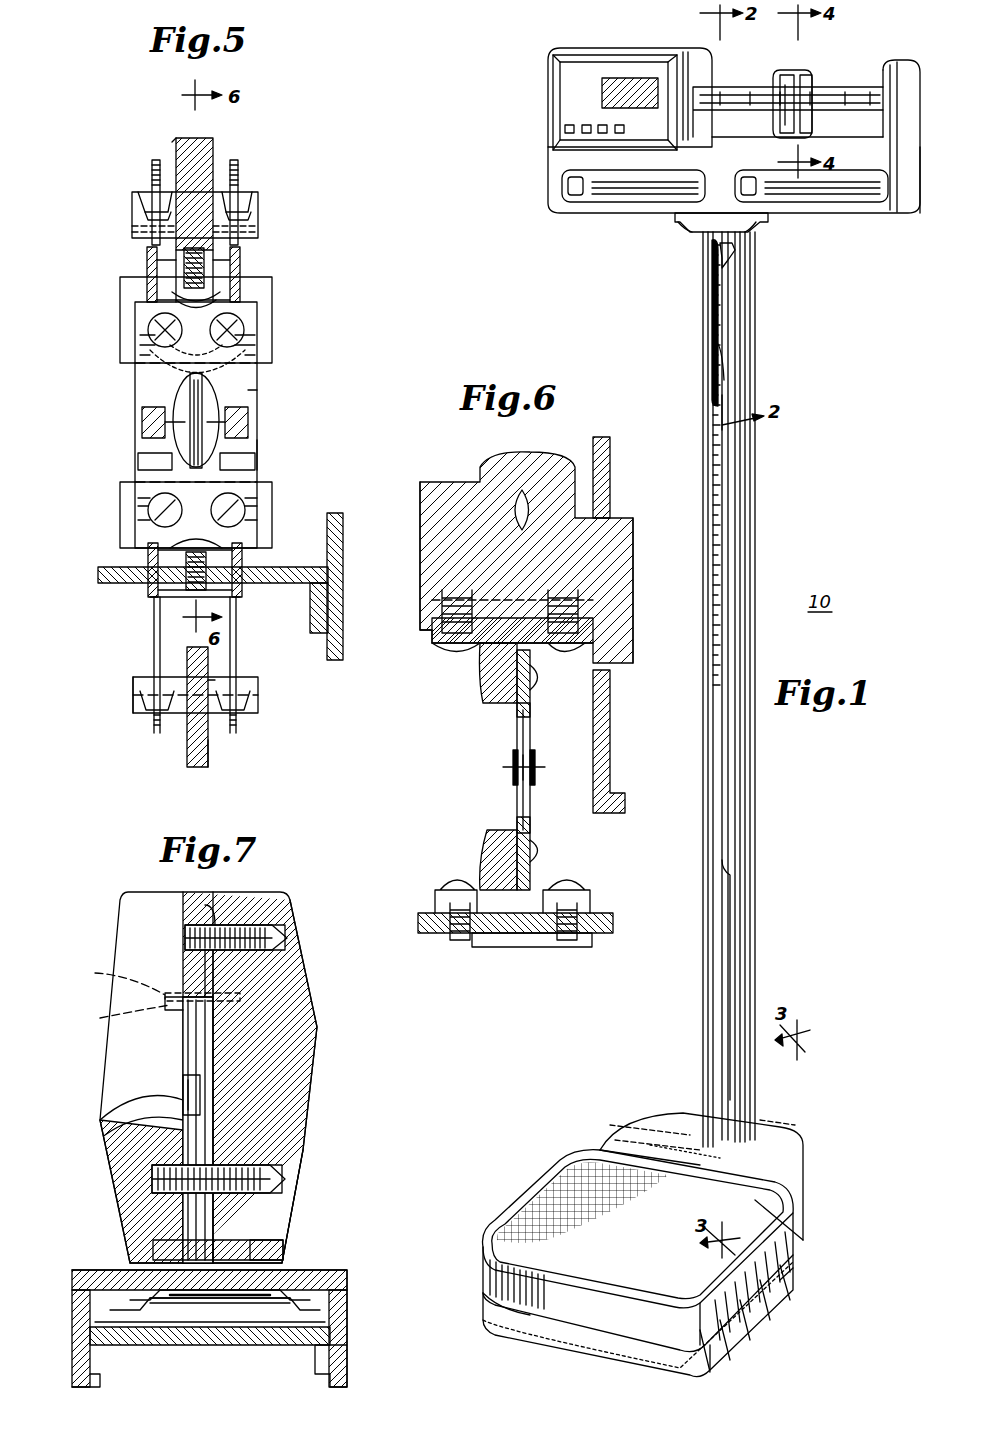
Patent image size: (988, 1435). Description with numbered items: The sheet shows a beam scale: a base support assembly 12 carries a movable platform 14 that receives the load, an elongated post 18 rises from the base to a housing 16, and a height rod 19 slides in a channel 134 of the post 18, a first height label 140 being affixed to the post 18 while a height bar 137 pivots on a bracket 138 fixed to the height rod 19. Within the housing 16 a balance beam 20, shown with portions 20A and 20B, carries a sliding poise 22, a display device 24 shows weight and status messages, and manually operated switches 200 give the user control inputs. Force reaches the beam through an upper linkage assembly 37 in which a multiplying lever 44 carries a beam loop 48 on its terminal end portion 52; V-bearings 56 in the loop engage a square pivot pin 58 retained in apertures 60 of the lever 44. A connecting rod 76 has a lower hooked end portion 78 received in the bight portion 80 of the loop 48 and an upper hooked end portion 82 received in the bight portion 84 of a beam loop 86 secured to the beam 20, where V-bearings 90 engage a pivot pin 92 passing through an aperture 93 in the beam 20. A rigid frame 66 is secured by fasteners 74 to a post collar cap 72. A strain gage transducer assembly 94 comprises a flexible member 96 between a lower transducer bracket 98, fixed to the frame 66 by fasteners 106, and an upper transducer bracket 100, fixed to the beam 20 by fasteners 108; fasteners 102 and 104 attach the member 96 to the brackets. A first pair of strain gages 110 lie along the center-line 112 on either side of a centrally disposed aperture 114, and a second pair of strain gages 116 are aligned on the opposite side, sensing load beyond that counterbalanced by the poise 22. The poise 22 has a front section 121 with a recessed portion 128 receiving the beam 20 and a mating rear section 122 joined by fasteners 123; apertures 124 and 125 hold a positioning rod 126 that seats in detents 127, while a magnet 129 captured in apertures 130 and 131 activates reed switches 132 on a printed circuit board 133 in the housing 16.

In FIG. 1, the base support assembly 12 is at (625, 1120).
In FIG. 1, the movable platform 14 is at (560, 1175).
In FIG. 7, the housing 16 is at (63, 1335).
In FIG. 6, the housing 16 is at (612, 452).
In FIG. 1, the housing 16 is at (598, 216).
In FIG. 1, the elongated post 18 is at (758, 840).
In FIG. 1, the height rod 19 is at (741, 755).
In FIG. 5, the balance beam 20 is at (182, 140).
In FIG. 7, the balance beam 20 is at (174, 1037).
In FIG. 6, the balance beam 20 is at (478, 470).
In FIG. 1, the balance beam 20 is at (720, 80).
In FIG. 5, the beam left portion 20A is at (205, 140).
In FIG. 6, the beam left portion 20A is at (428, 495).
In FIG. 7, the beam right portion 20B is at (220, 1042).
In FIG. 6, the beam right portion 20B is at (635, 530).
In FIG. 1, the beam right portion 20B is at (862, 82).
In FIG. 7, the poise 22 is at (108, 906).
In FIG. 1, the poise 22 is at (775, 82).
In FIG. 1, the display device 24 is at (632, 80).
In FIG. 5, the upper linkage assembly 37 is at (134, 739).
In FIG. 5, the multiplying lever 44 is at (190, 748).
In FIG. 5, the beam loop 48 is at (147, 630).
In FIG. 5, the terminal end portion 52 is at (210, 758).
In FIG. 5, the V-bearing 56 is at (142, 712).
In FIG. 5, the square pivot pin 58 is at (138, 682).
In FIG. 5, the apertures 60 is at (212, 680).
In FIG. 5, the rigid frame 66 is at (305, 585).
In FIG. 7, the rigid frame 66 is at (135, 1345).
In FIG. 6, the rigid frame 66 is at (598, 930).
In FIG. 1, the post collar cap 72 is at (695, 228).
In FIG. 1, the fasteners 74 is at (680, 226).
In FIG. 5, the connecting rod 76 is at (190, 398).
In FIG. 5, the lower hooked end portion 78 is at (258, 538).
In FIG. 5, the bight portion 80 is at (148, 558).
In FIG. 5, the upper hooked end portion 82 is at (194, 385).
In FIG. 5, the bight portion 84 is at (255, 370).
In FIG. 5, the beam loop 86 is at (245, 163).
In FIG. 5, the V-bearings 90 is at (150, 188).
In FIG. 5, the pivot pin 92 is at (258, 205).
In FIG. 5, the aperture 93 is at (170, 140).
In FIG. 5, the strain gage transducer assembly 94 is at (264, 439).
In FIG. 6, the strain gage transducer assembly 94 is at (506, 719).
In FIG. 5, the flexible member 96 is at (250, 390).
In FIG. 6, the flexible member 96 is at (532, 830).
In FIG. 5, the lower transducer bracket 98 is at (130, 500).
In FIG. 6, the lower transducer bracket 98 is at (495, 832).
In FIG. 5, the upper transducer bracket 100 is at (240, 258).
In FIG. 6, the upper transducer bracket 100 is at (488, 700).
In FIG. 5, the fasteners 102 is at (160, 508).
In FIG. 6, the fasteners 102 is at (538, 855).
In FIG. 5, the fasteners 104 is at (158, 330).
In FIG. 6, the fasteners 104 is at (535, 692).
In FIG. 5, the fasteners 106 is at (190, 595).
In FIG. 6, the fasteners 106 is at (458, 888).
In FIG. 5, the fasteners 108 is at (186, 300).
In FIG. 6, the fasteners 108 is at (448, 650).
In FIG. 5, the first pair of strain gages 110 is at (148, 425).
In FIG. 6, the first pair of strain gages 110 is at (535, 770).
In FIG. 5, the center-line 112 is at (140, 447).
In FIG. 6, the center-line 112 is at (505, 775).
In FIG. 5, the centrally disposed aperture 114 is at (215, 455).
In FIG. 6, the centrally disposed aperture 114 is at (530, 805).
In FIG. 6, the second pair of strain gages 116 is at (512, 760).
In FIG. 7, the front section 121 is at (125, 1190).
In FIG. 1, the front section 121 is at (795, 75).
In FIG. 7, the rear section 122 is at (292, 1118).
In FIG. 1, the rear section 122 is at (832, 85).
In FIG. 7, the fasteners 123 is at (290, 932).
In FIG. 7, the aperture 124 is at (110, 980).
In FIG. 7, the aperture 125 is at (245, 997).
In FIG. 7, the positioning rod 126 is at (215, 990).
In FIG. 7, the detents 127 is at (116, 1011).
In FIG. 7, the recessed portion 128 is at (180, 1075).
In FIG. 7, the magnet 129 is at (260, 1245).
In FIG. 7, the aperture 130 is at (160, 1248).
In FIG. 7, the aperture 131 is at (265, 1248).
In FIG. 7, the reed switches 132 is at (228, 1327).
In FIG. 7, the printed circuit board 133 is at (265, 1330).
In FIG. 1, the channel 134 is at (730, 888).
In FIG. 1, the height bar 137 is at (720, 348).
In FIG. 1, the bracket 138 is at (747, 245).
In FIG. 1, the first height label 140 is at (712, 660).
In FIG. 1, the manually operated switches 200 is at (618, 125).